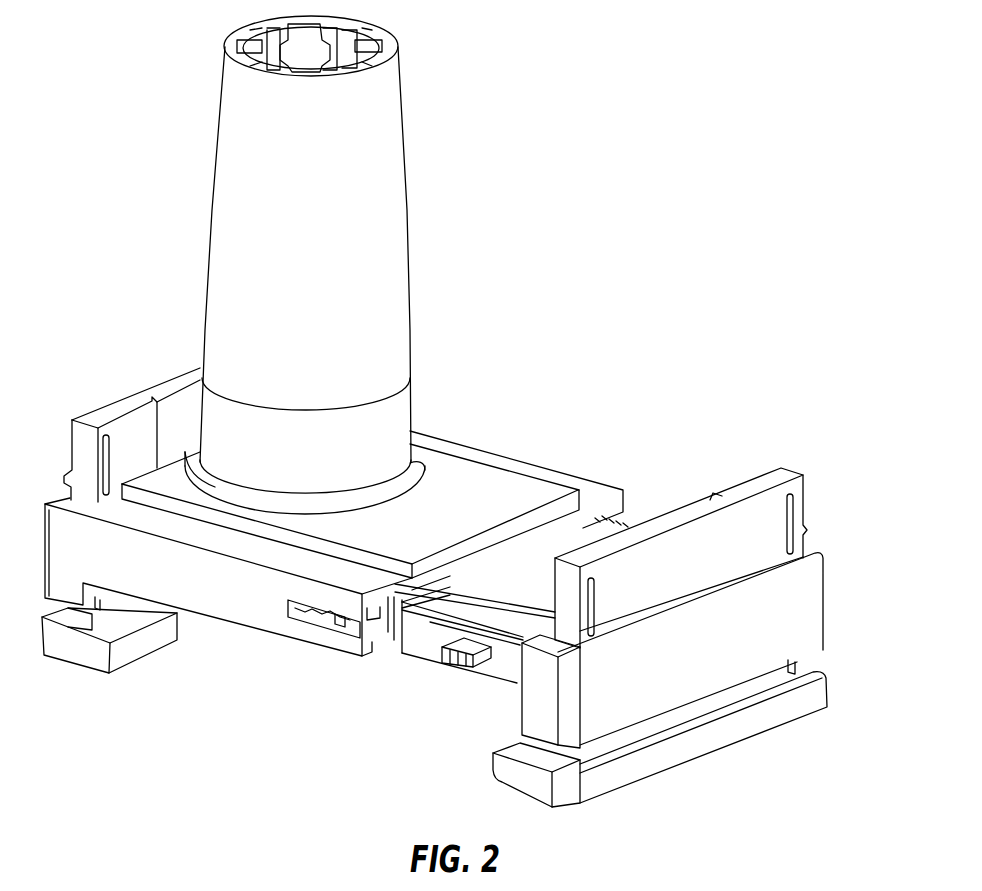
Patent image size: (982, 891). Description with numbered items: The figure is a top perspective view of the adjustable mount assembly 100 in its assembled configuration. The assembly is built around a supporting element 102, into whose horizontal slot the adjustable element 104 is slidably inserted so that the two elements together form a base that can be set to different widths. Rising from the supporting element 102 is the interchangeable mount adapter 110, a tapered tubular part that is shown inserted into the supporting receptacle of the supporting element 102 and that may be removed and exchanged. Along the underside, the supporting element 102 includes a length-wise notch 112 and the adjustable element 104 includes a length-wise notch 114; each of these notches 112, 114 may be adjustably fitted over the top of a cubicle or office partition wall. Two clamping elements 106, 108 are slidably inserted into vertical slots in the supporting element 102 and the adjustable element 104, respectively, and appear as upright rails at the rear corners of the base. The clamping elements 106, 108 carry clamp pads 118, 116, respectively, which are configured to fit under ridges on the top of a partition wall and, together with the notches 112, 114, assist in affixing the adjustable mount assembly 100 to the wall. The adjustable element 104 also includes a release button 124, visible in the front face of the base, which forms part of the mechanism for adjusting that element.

The adjustable mount assembly 100 is at (172, 149).
The supporting element 102 is at (440, 472).
The adjustable element 104 is at (708, 641).
The clamping element 106 is at (120, 413).
The clamping element 108 is at (773, 472).
The interchangeable mount adapter 110 is at (365, 217).
The length-wise notch 112 is at (103, 596).
The length-wise notch 114 is at (539, 747).
The clamp pad 116 is at (517, 744).
The clamp pad 118 is at (140, 614).
The release button 124 is at (442, 662).